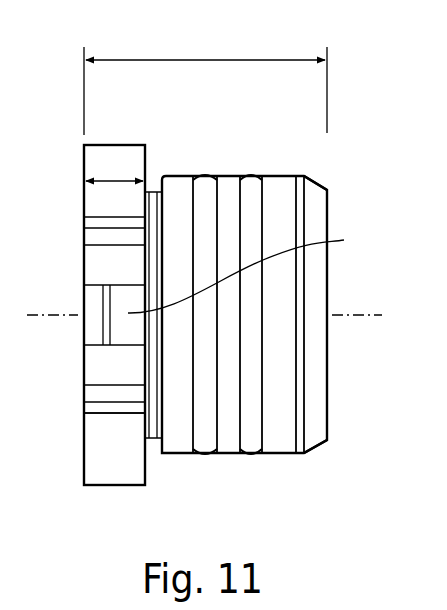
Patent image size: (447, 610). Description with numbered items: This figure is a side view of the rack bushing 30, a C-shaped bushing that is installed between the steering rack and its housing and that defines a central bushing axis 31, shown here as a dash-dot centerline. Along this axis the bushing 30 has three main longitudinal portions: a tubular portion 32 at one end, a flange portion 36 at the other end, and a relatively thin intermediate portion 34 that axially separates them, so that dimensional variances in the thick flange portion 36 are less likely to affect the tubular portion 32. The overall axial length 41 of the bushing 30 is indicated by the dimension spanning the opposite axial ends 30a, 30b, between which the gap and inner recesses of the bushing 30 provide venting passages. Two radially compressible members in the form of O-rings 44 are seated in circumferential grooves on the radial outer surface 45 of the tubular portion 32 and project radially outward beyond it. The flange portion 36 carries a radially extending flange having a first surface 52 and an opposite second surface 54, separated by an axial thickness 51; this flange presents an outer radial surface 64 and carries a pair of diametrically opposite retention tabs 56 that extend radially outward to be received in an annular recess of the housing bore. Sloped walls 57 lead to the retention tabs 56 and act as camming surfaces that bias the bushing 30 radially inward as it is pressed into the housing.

The rack bushing 30 is at (43, 170).
The first axial end of bushing 30a is at (83, 368).
The second axial end of bushing 30b is at (328, 404).
The central bushing axis 31 is at (336, 314).
The tubular portion 32 is at (272, 457).
The intermediate portion 34 is at (152, 438).
The flange portion 36 is at (115, 487).
The axial length of bushing 41 is at (195, 60).
The radially compressible member (O-ring) 44 is at (212, 184).
The radial outer surface of tubular portion 45 is at (288, 458).
The axial thickness of flange 51 is at (108, 182).
The first surface of flange 52 is at (148, 152).
The second surface of flange 54 is at (84, 155).
The retention tabs 56 is at (88, 307).
The sloped walls 57 is at (246, 268).
The outer radial surface of flange 64 is at (90, 443).